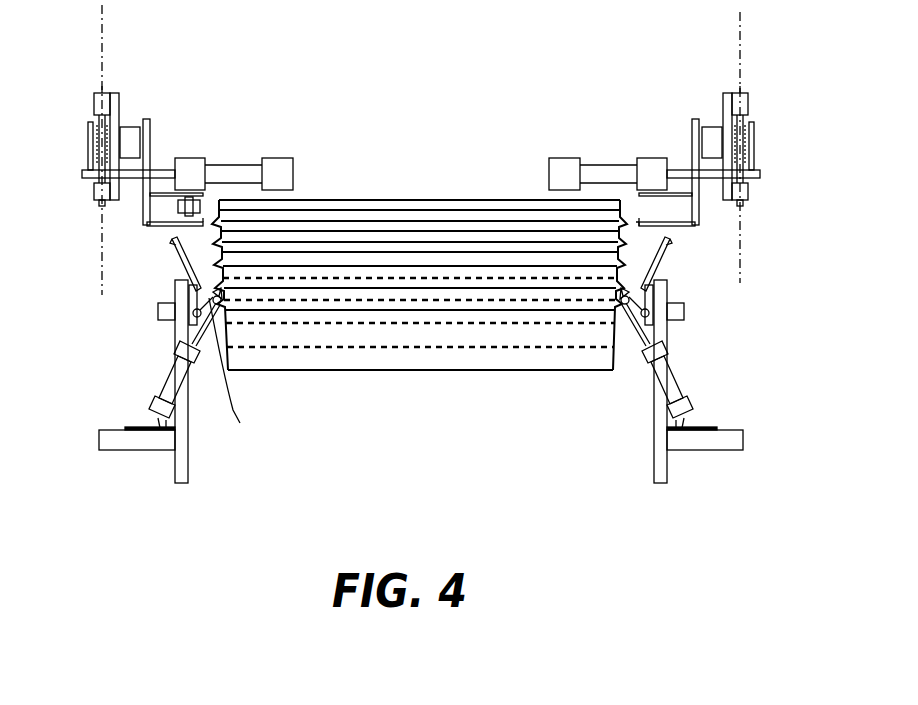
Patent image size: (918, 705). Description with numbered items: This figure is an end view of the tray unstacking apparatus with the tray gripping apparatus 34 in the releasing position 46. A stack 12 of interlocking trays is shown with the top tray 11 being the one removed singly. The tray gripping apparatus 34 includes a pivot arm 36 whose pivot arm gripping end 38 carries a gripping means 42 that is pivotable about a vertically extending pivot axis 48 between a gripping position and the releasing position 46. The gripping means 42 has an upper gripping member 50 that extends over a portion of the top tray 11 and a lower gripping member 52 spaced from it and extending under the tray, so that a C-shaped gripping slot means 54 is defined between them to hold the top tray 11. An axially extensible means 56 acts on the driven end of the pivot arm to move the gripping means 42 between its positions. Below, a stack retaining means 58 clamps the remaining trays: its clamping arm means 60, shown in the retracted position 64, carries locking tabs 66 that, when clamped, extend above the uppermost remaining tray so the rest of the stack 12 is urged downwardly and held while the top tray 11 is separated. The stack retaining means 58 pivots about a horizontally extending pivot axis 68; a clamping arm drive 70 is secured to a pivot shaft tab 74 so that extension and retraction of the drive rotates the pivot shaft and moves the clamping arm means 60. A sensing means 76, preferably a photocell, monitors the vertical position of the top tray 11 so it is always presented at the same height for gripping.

The top tray 11 is at (383, 197).
The stack 12 is at (620, 310).
The tray gripping apparatus 34 is at (180, 100).
The pivot arm 36 is at (157, 123).
The pivot arm gripping end 38 is at (150, 226).
The gripping means 42 is at (695, 226).
The releasing position 46 is at (152, 227).
The vertically extending pivot axis 48 is at (105, 35).
The upper gripping member 50 is at (192, 180).
The lower gripping member 52 is at (152, 227).
The gripping slot means 54 is at (153, 208).
The axially extensible means 56 is at (295, 175).
The stack retaining means 58 is at (201, 408).
The clamping arm means 60 is at (660, 267).
The retracted position 64 is at (182, 268).
The locking tabs 66 is at (176, 242).
The horizontally extending pivot axis 68 is at (200, 308).
The clamping arm drive 70 is at (170, 383).
The pivot shaft tab 74 is at (240, 423).
The sensing means 76 is at (200, 203).